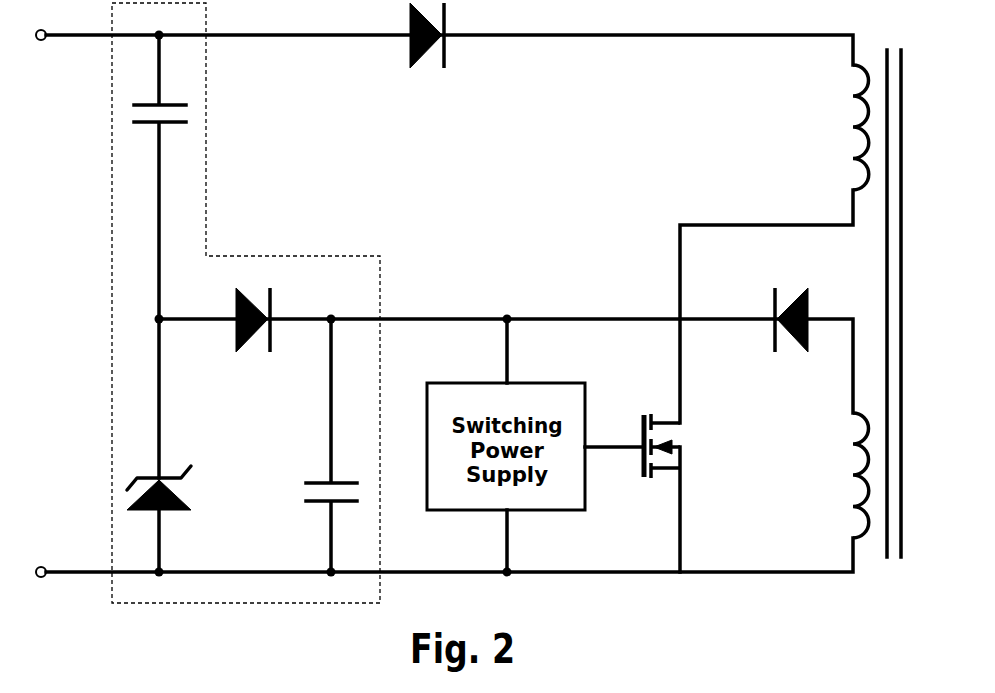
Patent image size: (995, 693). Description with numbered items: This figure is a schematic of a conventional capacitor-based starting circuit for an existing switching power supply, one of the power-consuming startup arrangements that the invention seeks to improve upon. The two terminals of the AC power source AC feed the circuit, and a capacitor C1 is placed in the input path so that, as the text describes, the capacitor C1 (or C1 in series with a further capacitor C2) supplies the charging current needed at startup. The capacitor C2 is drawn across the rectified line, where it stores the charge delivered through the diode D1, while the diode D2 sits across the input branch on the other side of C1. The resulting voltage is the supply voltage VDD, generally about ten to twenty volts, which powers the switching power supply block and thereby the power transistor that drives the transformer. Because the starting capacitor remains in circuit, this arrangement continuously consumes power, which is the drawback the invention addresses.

The capacitor C1 is at (167, 177).
The capacitor C2 is at (340, 445).
The first diode D1 is at (253, 307).
The zener diode D2 is at (181, 445).
The Vdd supply voltage VDD is at (551, 370).
The AC power source AC is at (29, 326).